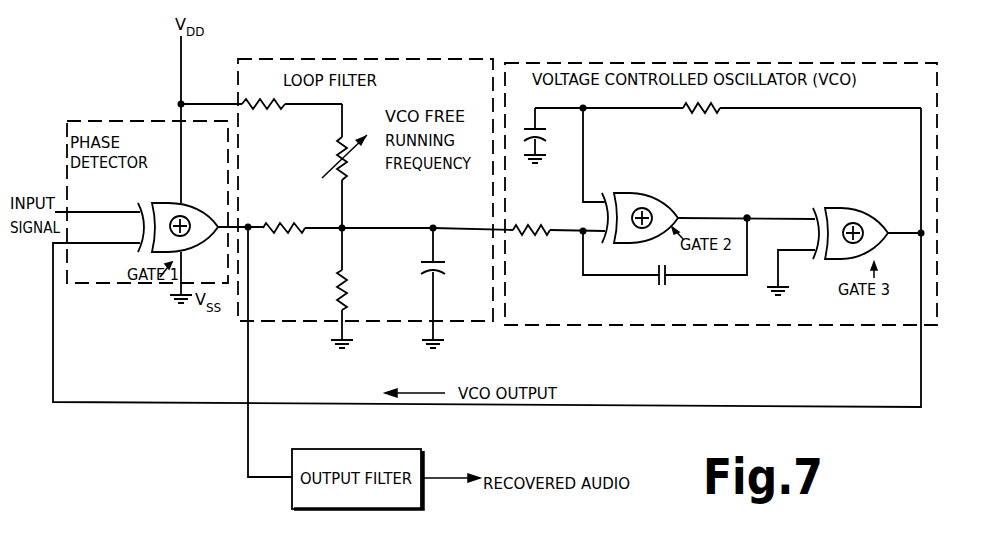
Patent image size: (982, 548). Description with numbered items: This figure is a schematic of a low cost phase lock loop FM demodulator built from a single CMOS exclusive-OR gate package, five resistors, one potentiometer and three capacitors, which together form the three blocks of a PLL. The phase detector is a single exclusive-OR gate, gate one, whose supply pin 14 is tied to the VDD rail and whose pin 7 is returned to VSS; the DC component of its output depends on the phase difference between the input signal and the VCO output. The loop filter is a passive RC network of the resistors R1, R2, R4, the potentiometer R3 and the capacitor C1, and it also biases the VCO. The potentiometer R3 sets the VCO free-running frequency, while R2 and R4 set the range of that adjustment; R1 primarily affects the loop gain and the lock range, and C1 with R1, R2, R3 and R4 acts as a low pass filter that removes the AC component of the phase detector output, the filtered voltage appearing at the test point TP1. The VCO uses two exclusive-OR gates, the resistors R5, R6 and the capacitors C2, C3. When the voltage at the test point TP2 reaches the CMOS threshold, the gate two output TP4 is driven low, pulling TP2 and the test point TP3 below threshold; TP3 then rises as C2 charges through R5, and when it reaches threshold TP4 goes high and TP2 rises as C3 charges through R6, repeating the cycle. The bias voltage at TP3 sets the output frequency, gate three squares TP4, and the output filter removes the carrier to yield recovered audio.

The VDD supply pin of gate 1 14 is at (193, 153).
The VSS ground pin of gate 1 7 is at (193, 273).
The resistor R1 is at (284, 215).
The resistor R2 is at (263, 117).
The potentiometer R3 is at (343, 169).
The resistor R4 is at (330, 290).
The resistor R5 is at (531, 243).
The resistor R6 is at (714, 119).
The capacitor C1 is at (440, 257).
The capacitor C2 is at (673, 285).
The capacitor C3 is at (548, 129).
The test point TP1 is at (432, 225).
The test point TP2 is at (589, 200).
The test point TP3 is at (580, 238).
The gate 2 output TP4 is at (749, 217).